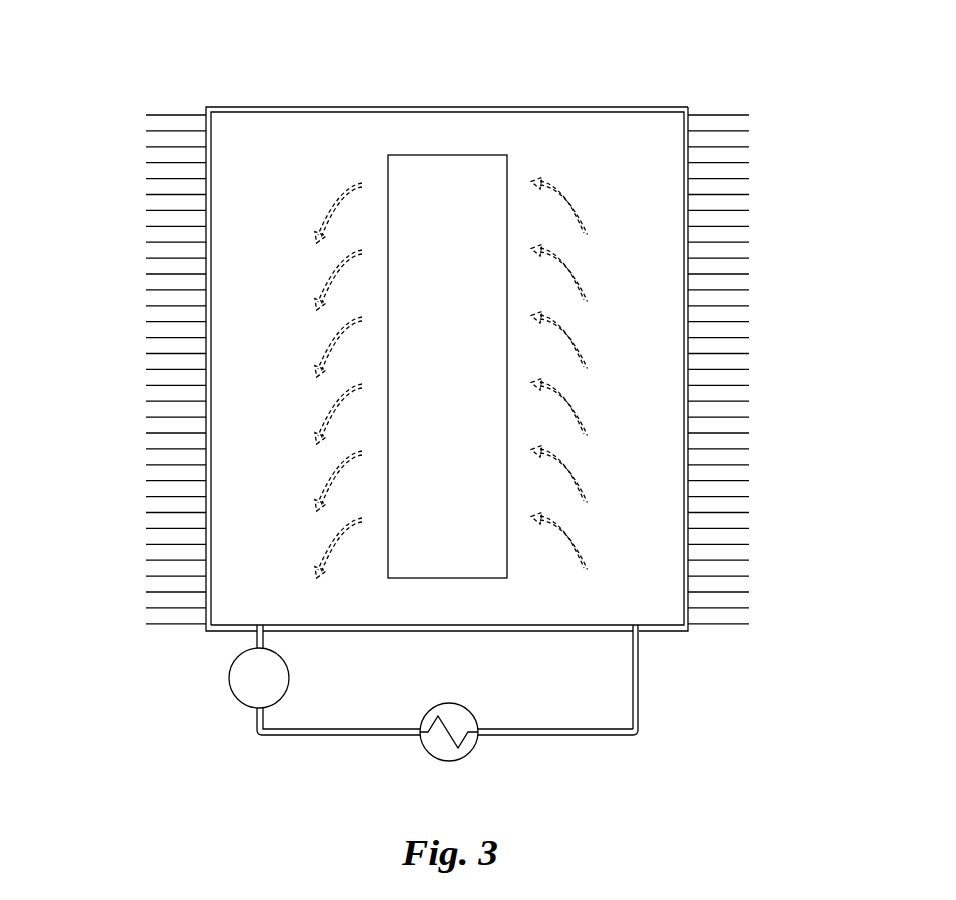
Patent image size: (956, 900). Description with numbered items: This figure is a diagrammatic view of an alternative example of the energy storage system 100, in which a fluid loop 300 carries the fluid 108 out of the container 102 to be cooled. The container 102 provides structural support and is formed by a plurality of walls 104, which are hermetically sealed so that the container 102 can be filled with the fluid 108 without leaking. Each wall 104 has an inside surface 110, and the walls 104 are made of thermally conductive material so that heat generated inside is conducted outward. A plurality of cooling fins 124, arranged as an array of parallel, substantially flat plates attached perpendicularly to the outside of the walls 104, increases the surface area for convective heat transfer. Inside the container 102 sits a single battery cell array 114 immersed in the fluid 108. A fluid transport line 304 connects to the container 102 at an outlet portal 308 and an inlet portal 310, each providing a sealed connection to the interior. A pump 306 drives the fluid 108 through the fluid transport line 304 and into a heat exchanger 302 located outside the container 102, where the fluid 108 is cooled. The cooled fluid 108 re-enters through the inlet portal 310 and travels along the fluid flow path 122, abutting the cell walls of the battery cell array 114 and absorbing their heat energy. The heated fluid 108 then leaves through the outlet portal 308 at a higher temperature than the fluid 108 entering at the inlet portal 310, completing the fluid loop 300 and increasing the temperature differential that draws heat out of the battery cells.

The energy storage system 100 is at (119, 166).
The container 102 is at (470, 106).
The walls 104 is at (686, 524).
The fluid 108 is at (603, 461).
The inside surface 110 is at (583, 626).
The battery cell array 114 is at (446, 185).
The fluid flow path 122 is at (577, 232).
The cooling fins 124 is at (172, 278).
The fluid loop 300 is at (315, 800).
The heat exchanger 302 is at (466, 761).
The fluid transport line 304 is at (271, 738).
The pump 306 is at (238, 700).
The outlet portal 308 is at (264, 627).
The inlet portal 310 is at (643, 627).